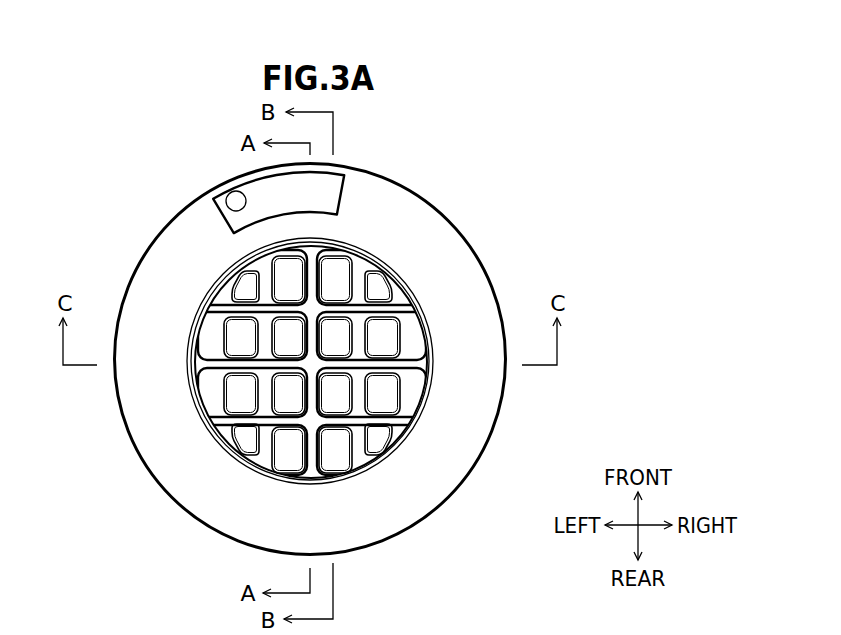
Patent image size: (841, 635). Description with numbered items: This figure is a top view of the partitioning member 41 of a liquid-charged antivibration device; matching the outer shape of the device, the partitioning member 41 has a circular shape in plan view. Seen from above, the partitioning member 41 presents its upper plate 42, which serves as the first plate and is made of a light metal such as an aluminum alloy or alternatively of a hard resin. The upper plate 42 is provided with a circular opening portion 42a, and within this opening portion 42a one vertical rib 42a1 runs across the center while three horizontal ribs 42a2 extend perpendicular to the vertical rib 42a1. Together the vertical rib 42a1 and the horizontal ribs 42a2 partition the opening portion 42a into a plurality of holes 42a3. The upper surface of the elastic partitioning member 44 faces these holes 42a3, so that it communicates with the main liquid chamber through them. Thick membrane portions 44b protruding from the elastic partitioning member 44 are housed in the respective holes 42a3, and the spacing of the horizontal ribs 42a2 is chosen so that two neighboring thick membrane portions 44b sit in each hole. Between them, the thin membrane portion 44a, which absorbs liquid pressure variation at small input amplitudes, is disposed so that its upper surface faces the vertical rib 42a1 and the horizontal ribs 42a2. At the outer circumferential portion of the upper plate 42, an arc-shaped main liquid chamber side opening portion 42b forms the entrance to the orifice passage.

The partitioning member 41 is at (302, 344).
The upper plate 42 is at (302, 344).
The opening portion 42a is at (302, 344).
The vertical rib 42a1 is at (309, 280).
The horizontal ribs 42a2 is at (353, 307).
The holes 42a3 is at (357, 458).
The main liquid chamber side opening portion 42b is at (227, 200).
The elastic partitioning member 44 is at (406, 382).
The thin membrane portion 44a is at (216, 384).
The thick membrane portions 44b is at (240, 398).